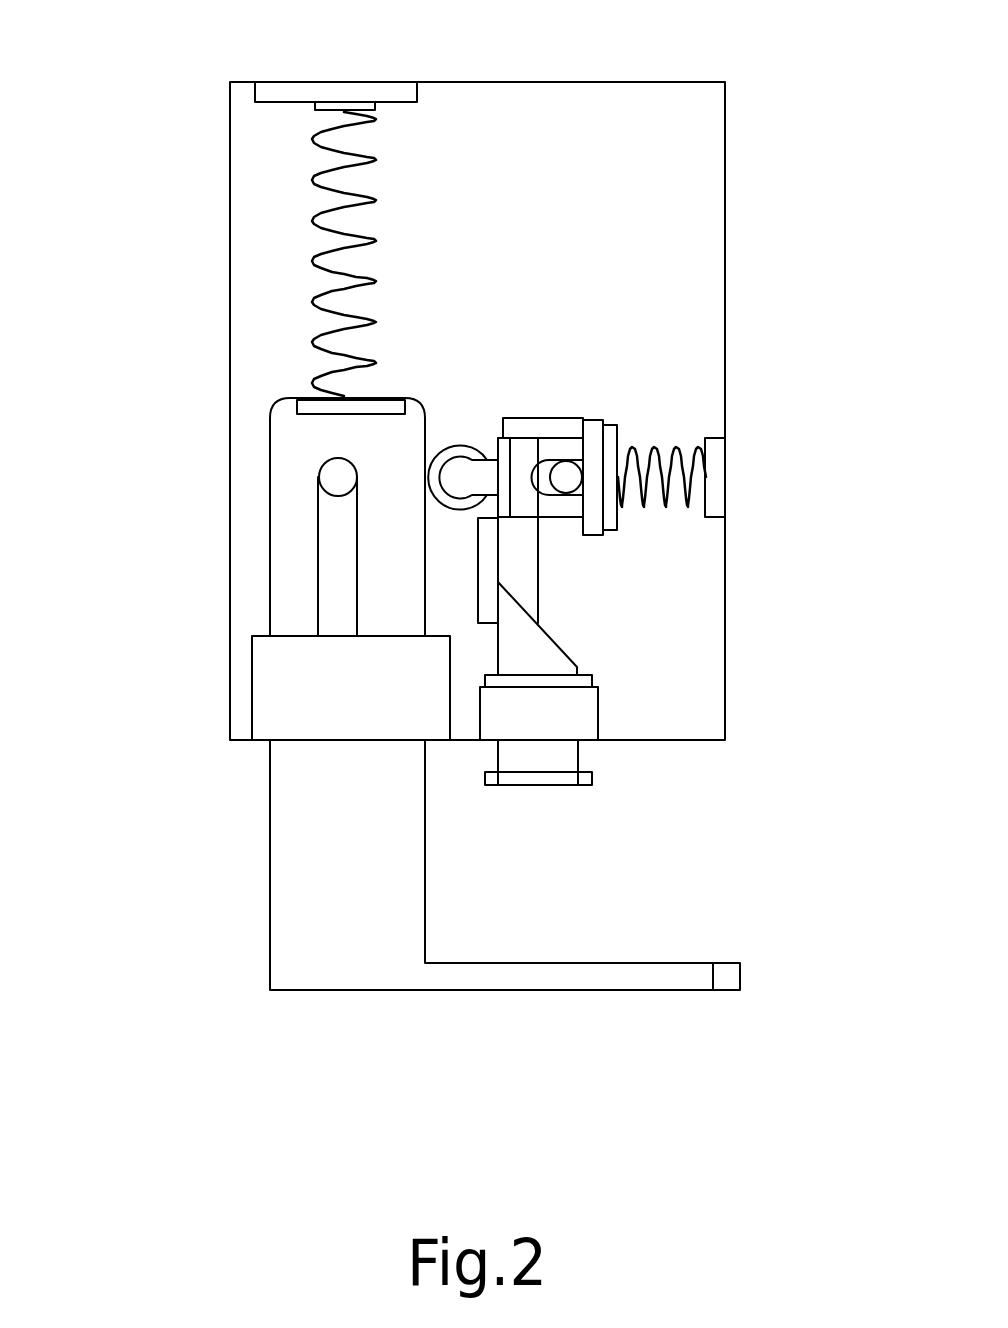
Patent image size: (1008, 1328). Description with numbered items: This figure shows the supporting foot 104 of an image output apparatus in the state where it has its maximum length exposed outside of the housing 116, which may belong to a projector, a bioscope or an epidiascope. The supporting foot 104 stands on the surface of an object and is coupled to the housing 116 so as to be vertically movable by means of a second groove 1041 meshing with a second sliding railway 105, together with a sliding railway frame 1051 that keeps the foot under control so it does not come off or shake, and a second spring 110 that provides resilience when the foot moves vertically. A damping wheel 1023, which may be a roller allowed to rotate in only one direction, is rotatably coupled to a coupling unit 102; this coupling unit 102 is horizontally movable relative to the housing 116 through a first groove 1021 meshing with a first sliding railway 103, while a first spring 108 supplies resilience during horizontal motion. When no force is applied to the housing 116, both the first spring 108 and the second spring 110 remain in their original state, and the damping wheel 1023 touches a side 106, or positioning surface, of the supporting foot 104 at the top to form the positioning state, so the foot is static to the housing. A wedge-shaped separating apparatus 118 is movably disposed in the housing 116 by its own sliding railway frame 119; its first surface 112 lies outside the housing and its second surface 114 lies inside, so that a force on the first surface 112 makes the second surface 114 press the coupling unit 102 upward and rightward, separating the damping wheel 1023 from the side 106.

The coupling unit 102 is at (540, 417).
The first sliding railway 103 is at (577, 445).
The supporting foot 104 is at (307, 890).
The second sliding railway 105 is at (335, 482).
The side 106 is at (418, 558).
The first spring 108 is at (700, 452).
The second spring 110 is at (363, 108).
The first surface 112 is at (500, 788).
The second surface 114 is at (555, 637).
The housing 116 is at (725, 618).
The separating apparatus 118 is at (602, 785).
The sliding railway frame 119 is at (580, 717).
The first groove 1021 is at (553, 483).
The damping wheel 1023 is at (457, 443).
The second groove 1041 is at (335, 527).
The sliding railway frame 1051 is at (278, 698).